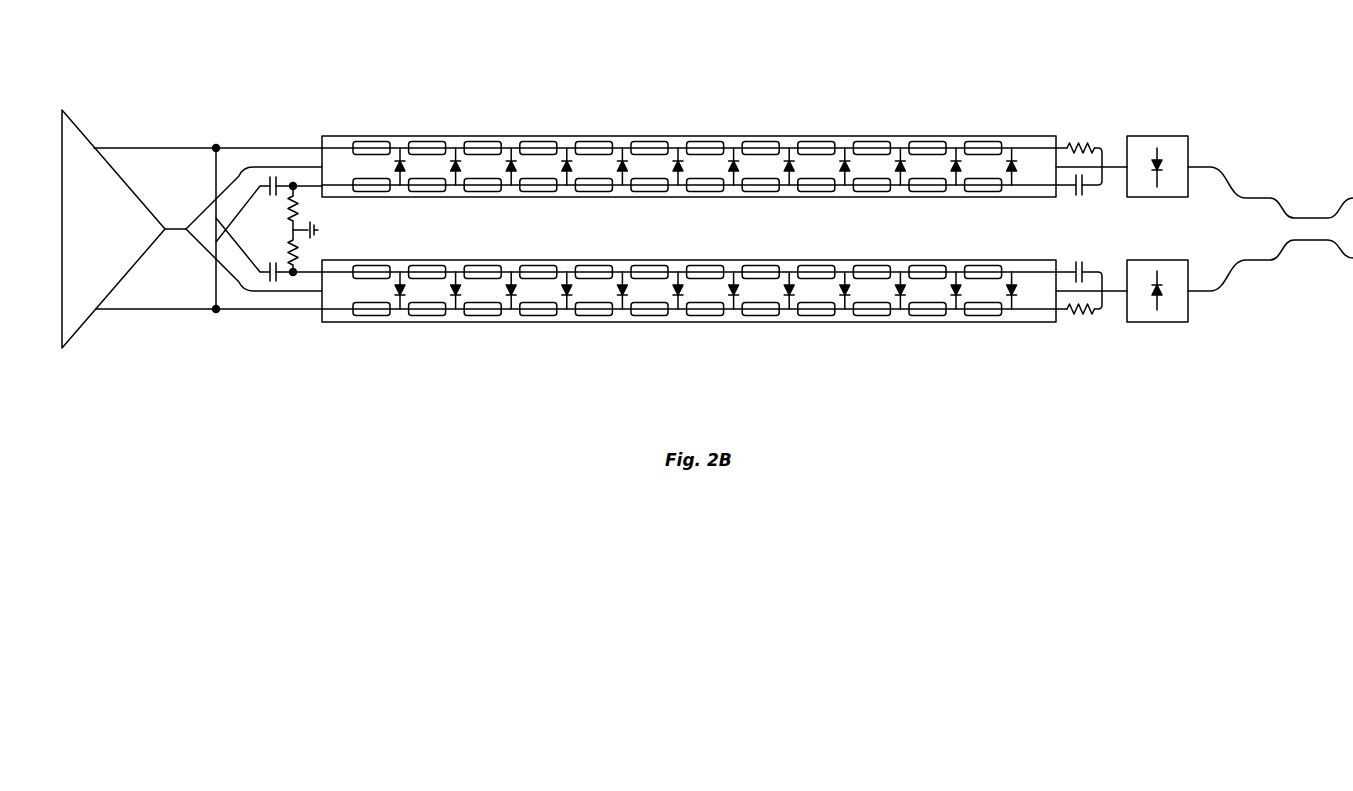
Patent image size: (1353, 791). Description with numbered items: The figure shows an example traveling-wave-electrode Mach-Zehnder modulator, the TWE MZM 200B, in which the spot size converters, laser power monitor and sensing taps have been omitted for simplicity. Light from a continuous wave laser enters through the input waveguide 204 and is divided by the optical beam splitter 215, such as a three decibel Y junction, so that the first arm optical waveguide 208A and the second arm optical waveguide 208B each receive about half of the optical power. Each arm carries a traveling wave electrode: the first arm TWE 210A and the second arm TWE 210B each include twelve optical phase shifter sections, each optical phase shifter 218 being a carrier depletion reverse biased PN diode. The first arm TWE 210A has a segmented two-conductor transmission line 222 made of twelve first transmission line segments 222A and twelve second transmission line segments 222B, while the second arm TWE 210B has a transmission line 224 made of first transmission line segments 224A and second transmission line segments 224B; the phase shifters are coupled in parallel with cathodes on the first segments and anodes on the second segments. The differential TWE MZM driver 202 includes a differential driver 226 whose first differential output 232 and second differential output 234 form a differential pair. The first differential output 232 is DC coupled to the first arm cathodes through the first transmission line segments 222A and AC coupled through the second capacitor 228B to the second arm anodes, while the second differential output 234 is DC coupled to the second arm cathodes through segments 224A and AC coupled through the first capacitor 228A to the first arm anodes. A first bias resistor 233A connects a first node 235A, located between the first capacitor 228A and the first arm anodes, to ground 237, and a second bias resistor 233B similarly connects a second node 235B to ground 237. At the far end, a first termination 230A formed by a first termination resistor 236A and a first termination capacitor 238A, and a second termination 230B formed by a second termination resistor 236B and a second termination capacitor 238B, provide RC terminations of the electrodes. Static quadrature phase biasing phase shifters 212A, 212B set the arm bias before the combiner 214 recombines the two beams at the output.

The TWE MZM 200B is at (889, 92).
The differential TWE MZM driver 202 is at (290, 82).
The input waveguide 204 is at (180, 230).
The first arm optical waveguide 208A is at (184, 228).
The second arm optical waveguide 208B is at (203, 250).
The first arm TWE 210A is at (689, 173).
The second arm TWE 210B is at (689, 341).
The first arm static quadrature phase biasing phase shifter 212A is at (1177, 136).
The second arm static quadrature phase biasing phase shifter 212B is at (1177, 322).
The combiner 214 is at (1312, 196).
The optical beam splitter 215 is at (204, 211).
The optical phase shifter 218 is at (565, 284).
The two-conductor transmission line 222 is at (677, 115).
The first transmission line segments 222A is at (553, 142).
The second transmission line segments 222B is at (730, 182).
The two-conductor transmission line 224 is at (677, 345).
The first transmission line segments 224A is at (553, 316).
The second transmission line segments 224B is at (730, 282).
The differential driver 226 is at (118, 240).
The first capacitor 228A is at (261, 183).
The second capacitor 228B is at (262, 275).
The first termination 230A is at (1120, 146).
The second termination 230B is at (1120, 314).
The first differential output 232 is at (216, 145).
The first bias resistor 233A is at (303, 182).
The second bias resistor 233B is at (303, 276).
The second differential output 234 is at (214, 312).
The first node 235A is at (294, 185).
The second node 235B is at (294, 273).
The first termination resistor 236A is at (1068, 140).
The second termination resistor 236B is at (1068, 317).
The ground 237 is at (318, 230).
The first termination capacitor 238A is at (1088, 195).
The second termination capacitor 238B is at (1088, 268).